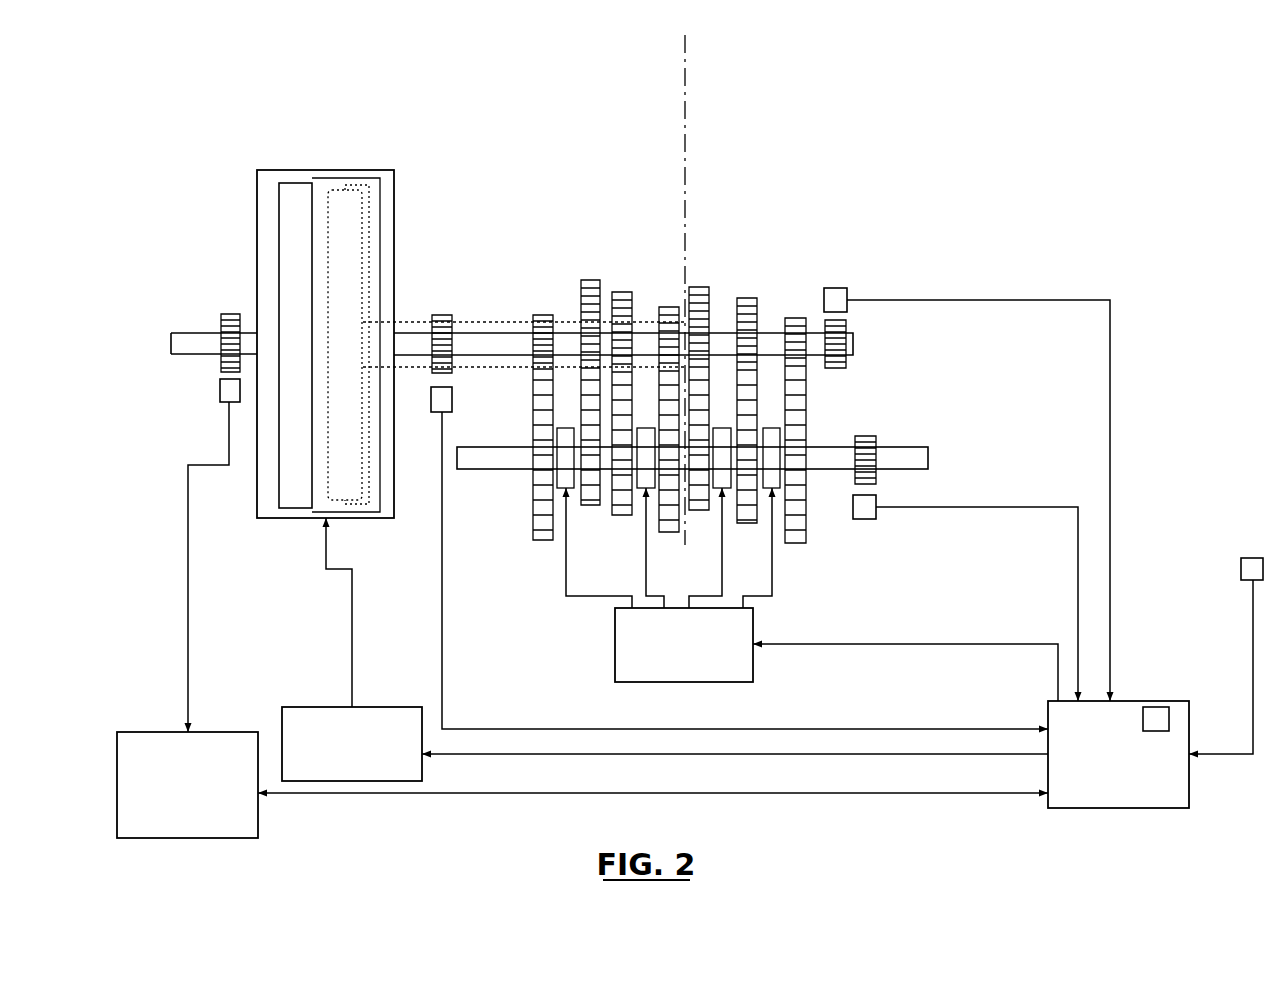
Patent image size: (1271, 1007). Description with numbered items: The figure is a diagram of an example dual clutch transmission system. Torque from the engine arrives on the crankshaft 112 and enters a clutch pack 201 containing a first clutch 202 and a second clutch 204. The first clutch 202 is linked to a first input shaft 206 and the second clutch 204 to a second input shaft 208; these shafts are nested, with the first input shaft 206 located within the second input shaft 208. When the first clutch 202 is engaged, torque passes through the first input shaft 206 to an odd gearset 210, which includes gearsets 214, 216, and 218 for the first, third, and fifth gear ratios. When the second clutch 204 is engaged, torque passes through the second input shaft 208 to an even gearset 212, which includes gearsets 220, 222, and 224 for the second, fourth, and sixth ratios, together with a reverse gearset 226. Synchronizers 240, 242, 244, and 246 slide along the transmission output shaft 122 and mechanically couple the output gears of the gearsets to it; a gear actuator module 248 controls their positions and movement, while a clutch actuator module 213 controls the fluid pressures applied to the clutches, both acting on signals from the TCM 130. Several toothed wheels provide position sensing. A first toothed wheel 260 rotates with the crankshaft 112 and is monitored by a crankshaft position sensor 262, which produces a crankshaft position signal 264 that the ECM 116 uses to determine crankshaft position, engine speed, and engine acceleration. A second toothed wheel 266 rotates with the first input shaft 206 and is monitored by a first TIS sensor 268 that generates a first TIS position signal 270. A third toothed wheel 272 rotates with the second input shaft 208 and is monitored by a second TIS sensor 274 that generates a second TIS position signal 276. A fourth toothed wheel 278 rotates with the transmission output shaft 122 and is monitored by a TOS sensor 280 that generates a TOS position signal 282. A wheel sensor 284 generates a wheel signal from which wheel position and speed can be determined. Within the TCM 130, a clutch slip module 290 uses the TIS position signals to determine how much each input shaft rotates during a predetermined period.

The crankshaft 112 is at (212, 332).
The ECM 116 is at (153, 730).
The transmission output shaft 122 is at (908, 447).
The TCM 130 is at (1133, 700).
The clutch pack 201 is at (387, 170).
The first clutch 202 is at (283, 183).
The second clutch 204 is at (340, 190).
The first input shaft 206 is at (493, 332).
The second input shaft 208 is at (515, 322).
The odd gearset 210 is at (728, 130).
The even gearset 212 is at (643, 130).
The clutch actuator module 213 is at (312, 707).
The gearset 214 is at (795, 310).
The gearset 216 is at (747, 292).
The gearset 218 is at (703, 277).
The gearset 220 is at (667, 299).
The gearset 222 is at (623, 281).
The gearset 224 is at (590, 277).
The reverse gearset 226 is at (543, 308).
The synchronizer 240 is at (781, 438).
The synchronizer 242 is at (730, 442).
The synchronizer 244 is at (552, 440).
The synchronizer 246 is at (632, 442).
The gear actuator module 248 is at (613, 643).
The first toothed wheel 260 is at (228, 308).
The crankshaft position sensor 262 is at (220, 396).
The crankshaft position signal 264 is at (187, 530).
The second toothed wheel 266 is at (853, 323).
The first transmission input shaft sensor 268 is at (837, 288).
The first TIS position signal 270 is at (952, 300).
The third toothed wheel 272 is at (443, 308).
The second TIS sensor 274 is at (431, 412).
The second TIS position signal 276 is at (441, 587).
The fourth toothed wheel 278 is at (877, 437).
The transmission output shaft sensor 280 is at (862, 519).
The TOS position signal 282 is at (946, 507).
The wheel sensor 284 is at (1247, 558).
The clutch slip module 290 is at (1160, 707).